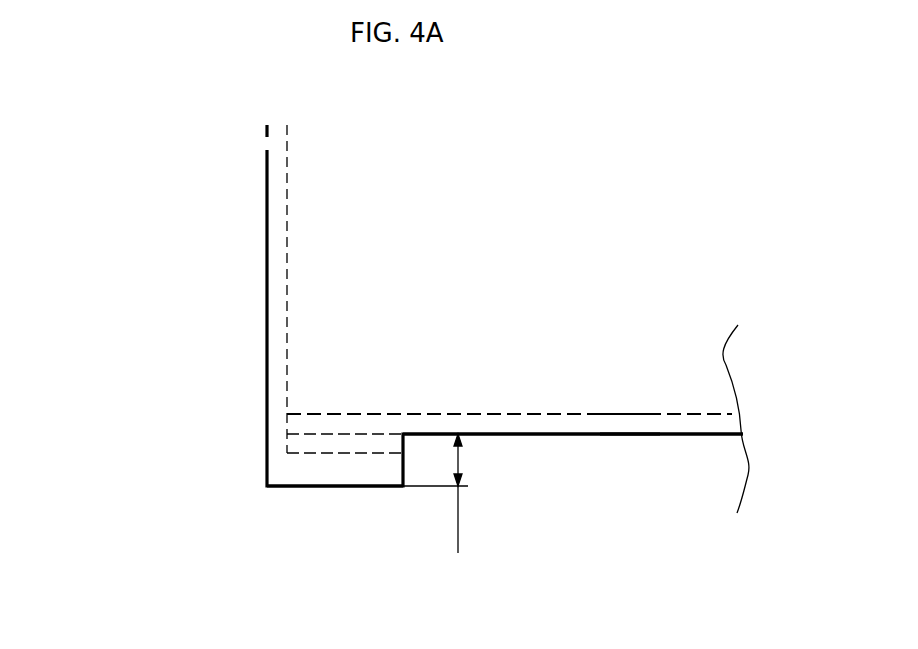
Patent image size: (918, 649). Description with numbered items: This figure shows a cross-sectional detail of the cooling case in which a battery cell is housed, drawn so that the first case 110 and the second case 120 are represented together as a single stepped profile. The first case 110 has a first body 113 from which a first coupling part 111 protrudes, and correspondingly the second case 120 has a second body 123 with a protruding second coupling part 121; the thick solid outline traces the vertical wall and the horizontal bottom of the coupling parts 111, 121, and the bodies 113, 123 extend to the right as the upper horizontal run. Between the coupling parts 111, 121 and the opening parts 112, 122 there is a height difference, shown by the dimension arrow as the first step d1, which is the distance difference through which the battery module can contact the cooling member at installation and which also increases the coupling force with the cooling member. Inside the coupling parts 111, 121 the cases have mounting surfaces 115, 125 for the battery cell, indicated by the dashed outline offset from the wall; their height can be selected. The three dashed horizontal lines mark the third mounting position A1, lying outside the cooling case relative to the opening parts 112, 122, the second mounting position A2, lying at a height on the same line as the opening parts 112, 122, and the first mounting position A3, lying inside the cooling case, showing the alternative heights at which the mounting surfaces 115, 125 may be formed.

The first case 110 is at (231, 209).
The second case 120 is at (409, 316).
The mounting surface 115 is at (288, 247).
The mounting surface 125 is at (182, 289).
The first coupling part 111 is at (302, 470).
The second coupling part 121 is at (316, 529).
The opening part 112 is at (513, 437).
The opening part 122 is at (573, 531).
The first body 113 is at (625, 393).
The second body 123 is at (618, 448).
The third mounting position A1 is at (323, 413).
The second mounting position A2 is at (305, 433).
The first mounting position A3 is at (311, 452).
The first step d1 is at (439, 511).